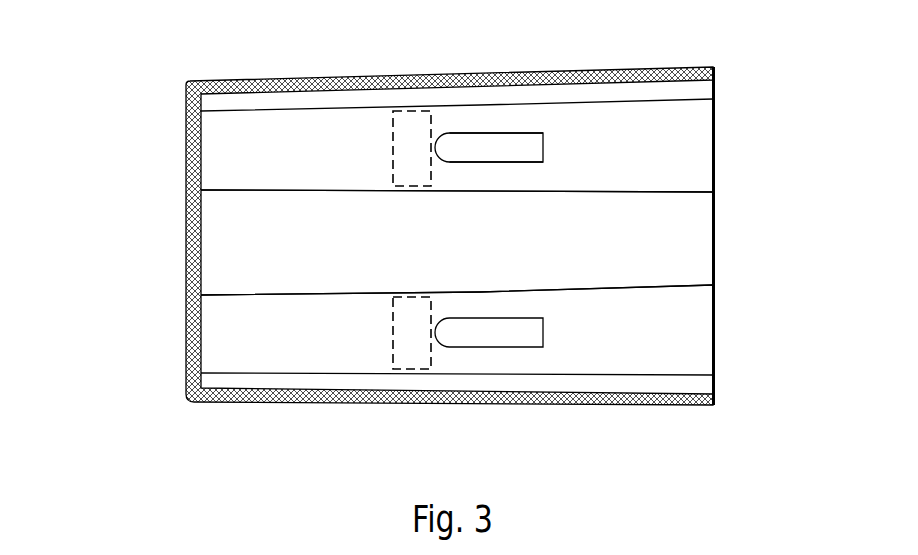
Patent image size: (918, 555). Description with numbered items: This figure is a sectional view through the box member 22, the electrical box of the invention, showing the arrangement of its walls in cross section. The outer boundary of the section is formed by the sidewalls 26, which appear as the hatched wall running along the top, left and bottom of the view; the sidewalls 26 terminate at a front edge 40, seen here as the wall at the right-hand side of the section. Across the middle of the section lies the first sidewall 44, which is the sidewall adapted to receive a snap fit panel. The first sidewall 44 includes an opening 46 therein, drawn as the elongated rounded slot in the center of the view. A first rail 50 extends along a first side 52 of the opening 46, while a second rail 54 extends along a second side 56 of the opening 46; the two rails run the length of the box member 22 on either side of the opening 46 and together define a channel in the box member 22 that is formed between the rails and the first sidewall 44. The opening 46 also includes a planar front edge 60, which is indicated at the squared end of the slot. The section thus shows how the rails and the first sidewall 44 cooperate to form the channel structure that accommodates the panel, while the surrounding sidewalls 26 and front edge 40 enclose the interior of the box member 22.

The box member 22 is at (137, 100).
The sidewalls 26 is at (578, 80).
The front edge 40 is at (714, 112).
The first sidewall 44 is at (695, 224).
The opening 46 is at (518, 151).
The first rail 50 is at (582, 100).
The first side of the opening 52 is at (497, 133).
The second rail 54 is at (657, 190).
The second side of the opening 56 is at (498, 162).
The planar front edge 60 is at (543, 146).